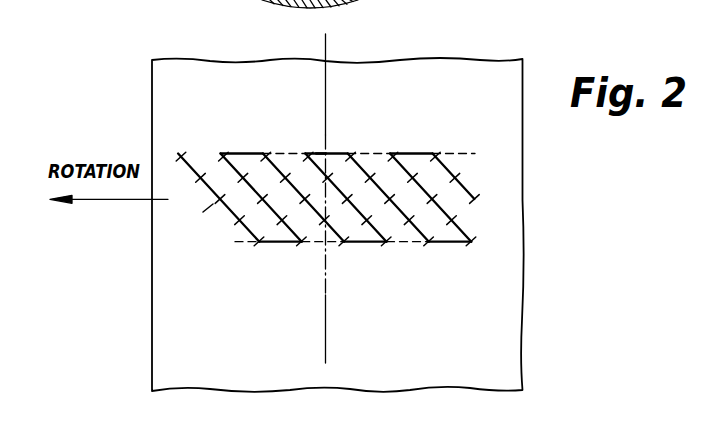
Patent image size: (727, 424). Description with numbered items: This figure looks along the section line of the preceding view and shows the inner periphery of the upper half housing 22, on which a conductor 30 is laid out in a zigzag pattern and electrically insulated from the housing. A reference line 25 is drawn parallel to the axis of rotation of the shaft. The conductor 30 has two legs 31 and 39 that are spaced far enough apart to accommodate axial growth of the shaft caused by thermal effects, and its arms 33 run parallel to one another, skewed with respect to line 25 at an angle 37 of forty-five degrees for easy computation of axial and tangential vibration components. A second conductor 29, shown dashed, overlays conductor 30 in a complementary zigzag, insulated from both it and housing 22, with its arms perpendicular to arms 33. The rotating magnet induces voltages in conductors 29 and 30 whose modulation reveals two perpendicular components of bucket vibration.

The upper half housing 22 is at (172, 59).
The line 25 is at (329, 48).
The second conductor 29 is at (473, 155).
The conductor 30 is at (285, 244).
The leg 31 is at (246, 152).
The arms 33 is at (228, 163).
The angle 37 is at (318, 146).
The leg 39 is at (260, 244).